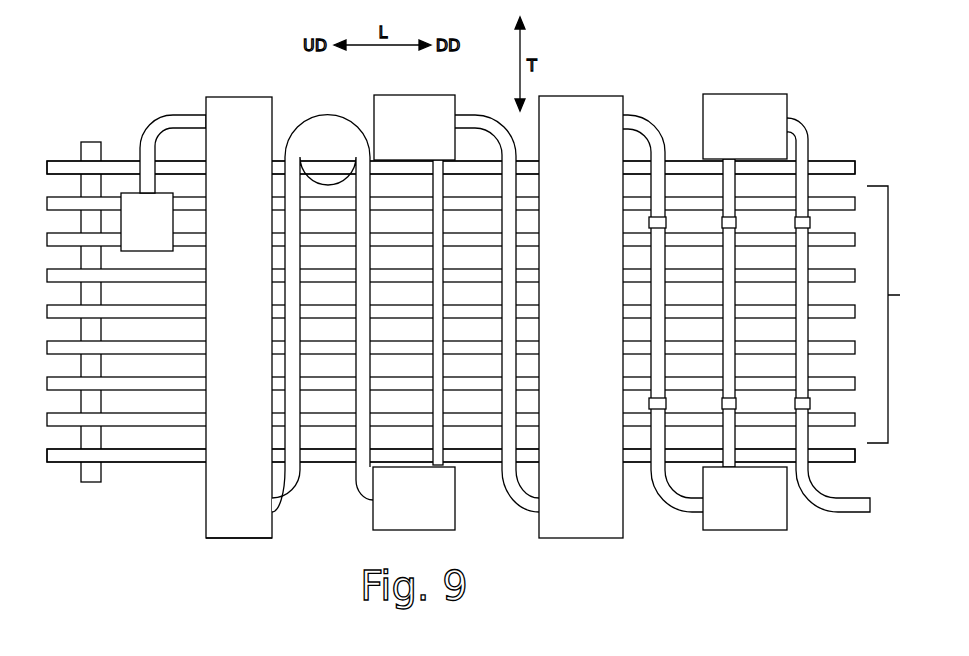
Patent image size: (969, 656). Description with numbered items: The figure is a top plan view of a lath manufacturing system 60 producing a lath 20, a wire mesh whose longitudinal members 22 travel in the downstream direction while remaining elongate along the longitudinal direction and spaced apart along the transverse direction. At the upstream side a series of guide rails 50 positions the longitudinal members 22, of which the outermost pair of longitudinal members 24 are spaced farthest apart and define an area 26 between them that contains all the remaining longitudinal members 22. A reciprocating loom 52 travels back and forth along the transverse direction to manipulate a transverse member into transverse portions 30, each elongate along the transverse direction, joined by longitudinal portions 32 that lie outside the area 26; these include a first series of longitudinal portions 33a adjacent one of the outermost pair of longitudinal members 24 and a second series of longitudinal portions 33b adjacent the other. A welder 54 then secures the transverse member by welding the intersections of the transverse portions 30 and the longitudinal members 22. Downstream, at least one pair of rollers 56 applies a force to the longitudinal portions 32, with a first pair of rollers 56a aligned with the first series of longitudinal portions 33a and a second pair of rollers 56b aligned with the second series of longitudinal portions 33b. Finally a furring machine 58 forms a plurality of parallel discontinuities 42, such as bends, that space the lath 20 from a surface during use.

The lath 20 is at (827, 156).
The longitudinal members 22 is at (68, 161).
The outermost pair of longitudinal members 24 is at (848, 161).
The area 26 is at (897, 314).
The transverse portions 30 is at (291, 431).
The longitudinal portions 32 is at (320, 118).
The first series of longitudinal portions 33a is at (327, 120).
The second series of longitudinal portions 33b is at (693, 513).
The discontinuity 42 is at (810, 222).
The guide rails 50 is at (90, 483).
The reciprocating loom 52 is at (137, 193).
The welder 54 is at (220, 96).
The pair of rollers 56 is at (376, 94).
The first pair of rollers 56a is at (438, 95).
The second pair of rollers 56b is at (387, 531).
The furring machine 58 is at (612, 96).
The lath manufacturing system 60 is at (237, 547).